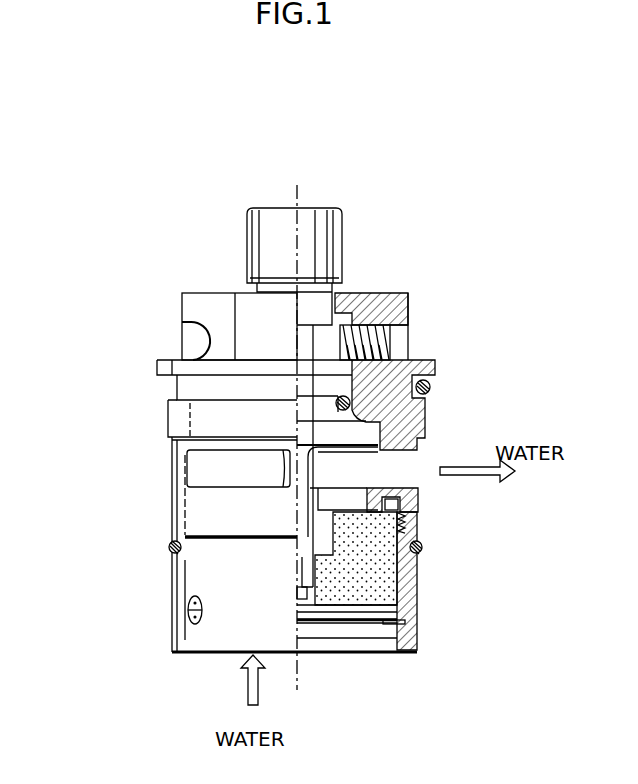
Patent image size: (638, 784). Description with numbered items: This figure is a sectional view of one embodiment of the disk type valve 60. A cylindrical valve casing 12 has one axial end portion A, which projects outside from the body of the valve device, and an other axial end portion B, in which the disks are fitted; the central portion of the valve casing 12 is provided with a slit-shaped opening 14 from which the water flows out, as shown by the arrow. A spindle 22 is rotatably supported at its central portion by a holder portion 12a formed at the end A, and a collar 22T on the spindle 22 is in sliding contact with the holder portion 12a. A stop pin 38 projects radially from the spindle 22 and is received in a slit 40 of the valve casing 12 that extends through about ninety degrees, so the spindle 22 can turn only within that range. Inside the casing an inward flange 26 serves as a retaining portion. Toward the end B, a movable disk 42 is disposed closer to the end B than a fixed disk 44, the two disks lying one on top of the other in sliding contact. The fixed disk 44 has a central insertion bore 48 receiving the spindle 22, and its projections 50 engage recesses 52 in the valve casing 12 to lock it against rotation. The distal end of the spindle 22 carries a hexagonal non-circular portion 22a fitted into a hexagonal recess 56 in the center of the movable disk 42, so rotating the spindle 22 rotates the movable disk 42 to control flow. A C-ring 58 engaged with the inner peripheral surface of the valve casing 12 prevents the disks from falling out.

The disk type valve 60 is at (115, 418).
The spindle 22 is at (330, 228).
The collar 22T is at (348, 291).
The holder portion 12a is at (393, 306).
The stop pin 38 is at (392, 337).
The slit 40 is at (400, 352).
The valve casing 12 is at (190, 517).
The slit-shaped opening 14 is at (205, 472).
The insertion bore 48 is at (330, 522).
The non-circular portion 22a is at (306, 572).
The non-circular recess 56 is at (305, 598).
The inward flange 26 is at (362, 494).
The projections 50 is at (395, 509).
The recesses 52 is at (410, 506).
The fixed disk 44 is at (385, 549).
The movable disk 42 is at (380, 591).
The C-ring 58 is at (372, 624).
The one axial end portion A is at (205, 292).
The other axial end portion B is at (205, 654).